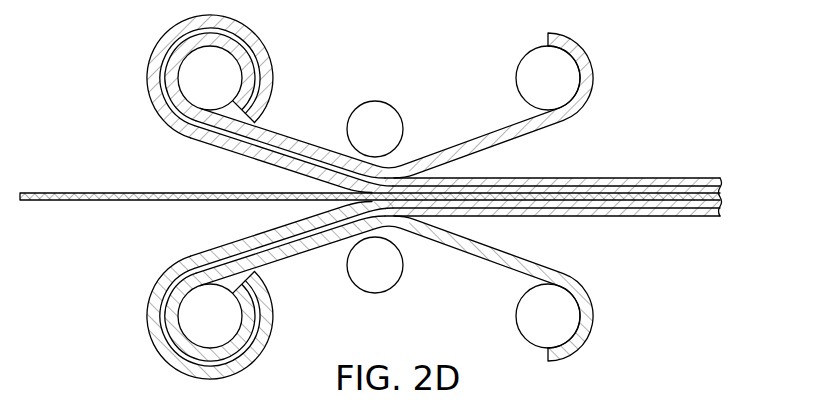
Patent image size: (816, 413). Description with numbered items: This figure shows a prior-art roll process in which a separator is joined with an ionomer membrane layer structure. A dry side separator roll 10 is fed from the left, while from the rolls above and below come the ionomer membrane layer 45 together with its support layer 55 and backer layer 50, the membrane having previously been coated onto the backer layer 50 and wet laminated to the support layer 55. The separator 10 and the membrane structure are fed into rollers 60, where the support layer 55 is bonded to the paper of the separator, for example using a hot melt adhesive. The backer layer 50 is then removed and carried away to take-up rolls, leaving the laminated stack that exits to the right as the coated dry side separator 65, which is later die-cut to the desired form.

The dry side separator 10 is at (97, 191).
The ionomer membrane layer 45 is at (160, 90).
The backer layer 50 is at (277, 133).
The support layer 55 is at (217, 148).
The rollers 60 is at (380, 101).
The coated dry side separator 65 is at (645, 177).